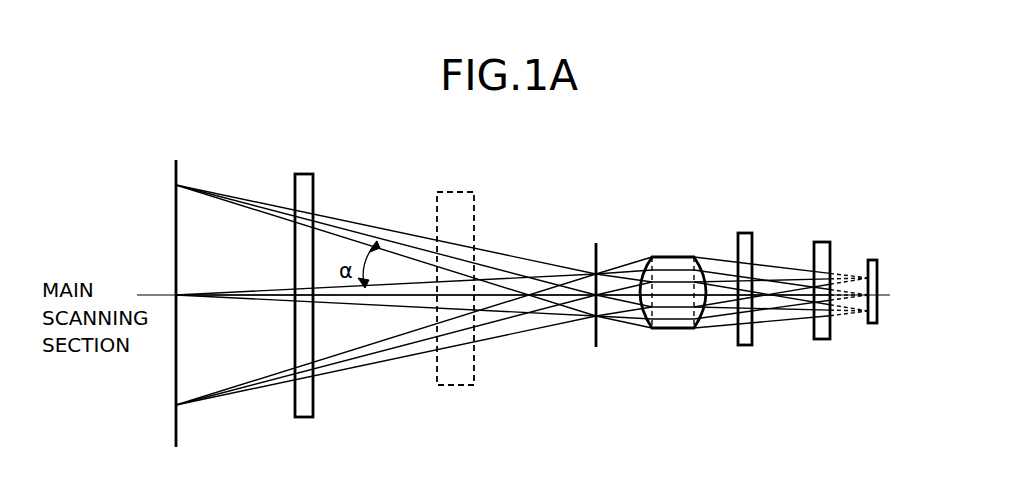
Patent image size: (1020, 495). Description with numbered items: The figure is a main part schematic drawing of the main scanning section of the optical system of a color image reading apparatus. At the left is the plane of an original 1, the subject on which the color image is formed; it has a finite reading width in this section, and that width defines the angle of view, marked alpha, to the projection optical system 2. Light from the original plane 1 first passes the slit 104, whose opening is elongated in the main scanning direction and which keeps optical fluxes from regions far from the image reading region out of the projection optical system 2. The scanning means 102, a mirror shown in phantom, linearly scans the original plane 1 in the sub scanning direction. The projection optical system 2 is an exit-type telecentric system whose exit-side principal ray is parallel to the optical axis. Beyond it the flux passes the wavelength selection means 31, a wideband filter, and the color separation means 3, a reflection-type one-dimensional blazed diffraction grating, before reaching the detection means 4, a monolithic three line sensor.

The plane of an original 1 is at (176, 172).
The slit 104 is at (310, 178).
The scanning means 102 is at (455, 198).
The projection optical system 2 is at (723, 220).
The wavelength selection means 31 is at (745, 240).
The color separation means 3 is at (821, 247).
The detection means 4 is at (870, 262).